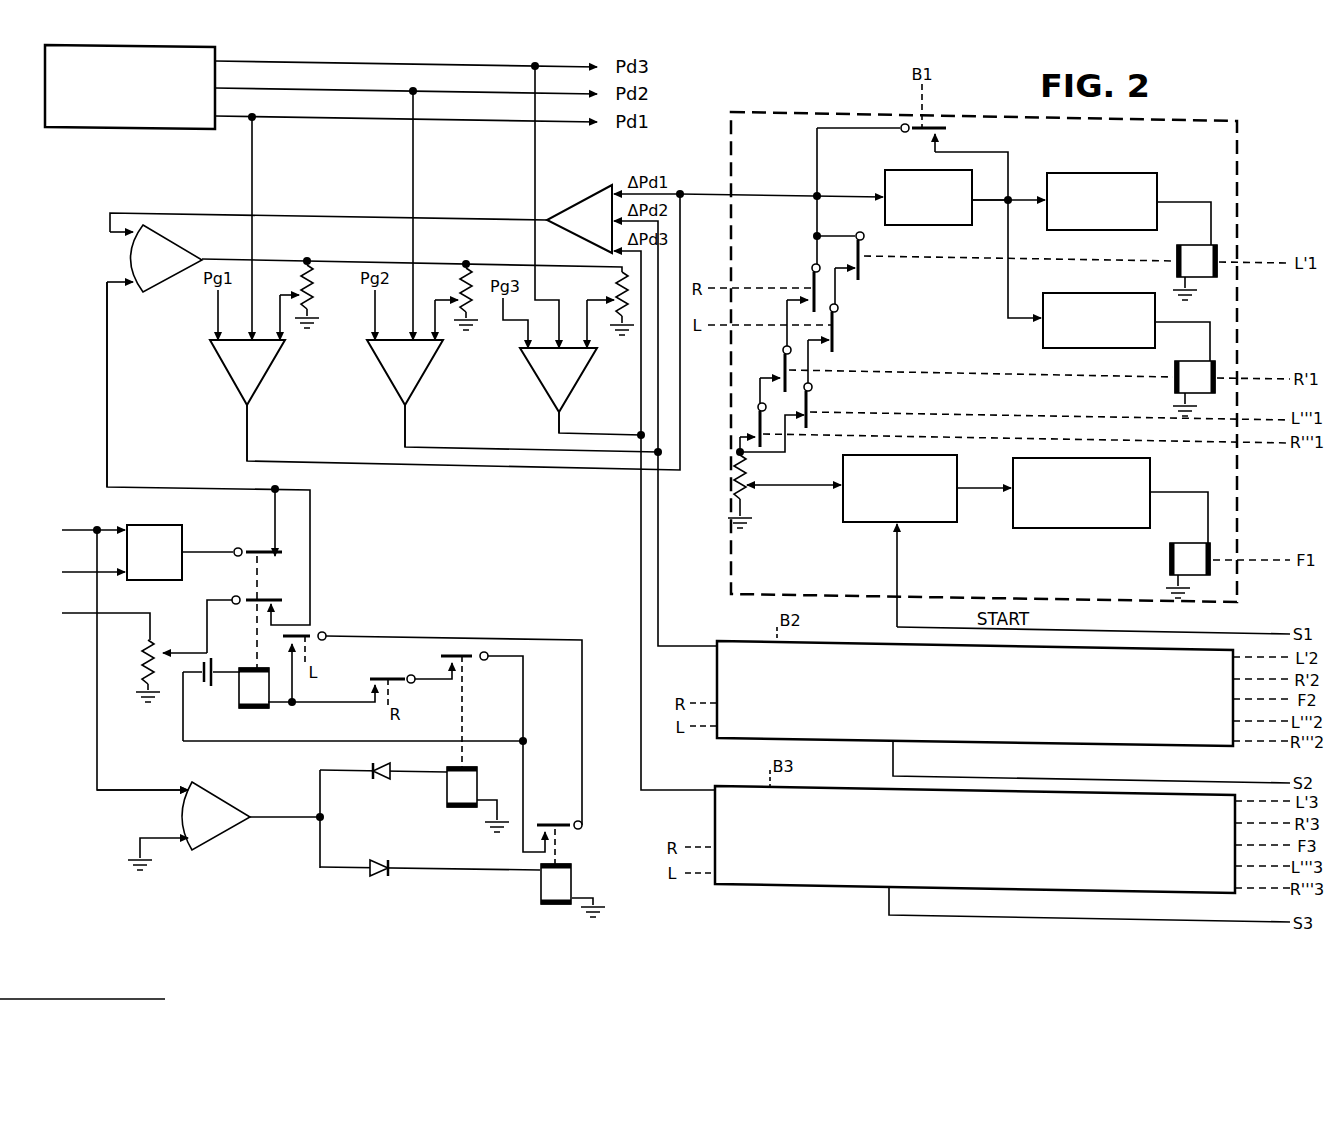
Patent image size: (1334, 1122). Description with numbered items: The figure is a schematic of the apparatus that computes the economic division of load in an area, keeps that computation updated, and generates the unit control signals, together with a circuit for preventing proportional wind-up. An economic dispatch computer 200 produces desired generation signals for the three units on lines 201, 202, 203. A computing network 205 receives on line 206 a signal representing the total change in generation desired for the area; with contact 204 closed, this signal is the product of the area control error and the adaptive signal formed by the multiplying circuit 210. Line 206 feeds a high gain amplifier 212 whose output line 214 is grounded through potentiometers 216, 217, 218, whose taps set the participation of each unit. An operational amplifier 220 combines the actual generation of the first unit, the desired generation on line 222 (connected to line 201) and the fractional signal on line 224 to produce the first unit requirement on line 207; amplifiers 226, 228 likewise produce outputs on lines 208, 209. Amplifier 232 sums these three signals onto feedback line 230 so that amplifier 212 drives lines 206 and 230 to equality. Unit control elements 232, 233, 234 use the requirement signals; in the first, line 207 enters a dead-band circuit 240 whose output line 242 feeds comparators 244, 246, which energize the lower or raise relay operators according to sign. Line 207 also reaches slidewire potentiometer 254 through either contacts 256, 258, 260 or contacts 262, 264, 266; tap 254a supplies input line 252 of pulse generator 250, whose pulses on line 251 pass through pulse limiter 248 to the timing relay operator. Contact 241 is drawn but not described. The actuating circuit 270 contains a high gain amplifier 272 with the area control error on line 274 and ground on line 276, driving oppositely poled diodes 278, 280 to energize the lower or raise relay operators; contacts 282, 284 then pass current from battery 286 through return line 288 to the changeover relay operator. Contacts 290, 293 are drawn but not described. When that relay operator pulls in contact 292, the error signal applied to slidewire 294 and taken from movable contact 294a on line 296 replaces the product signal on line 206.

The economic dispatch computer 200 is at (165, 128).
The line 201 is at (510, 121).
The line 202 is at (515, 93).
The line 203 is at (520, 66).
The contact 204 is at (258, 548).
The computing network 205 is at (284, 424).
The line 206 is at (107, 380).
The line 207 is at (245, 434).
The line 208 is at (403, 416).
The line 209 is at (602, 432).
The multiplying circuit 210 is at (152, 525).
The high gain amplifier 212 is at (165, 246).
The output line 214 is at (330, 265).
The potentiometer 216 is at (300, 272).
The potentiometer 217 is at (462, 272).
The potentiometer 218 is at (612, 272).
The operational amplifier 220 is at (226, 376).
The line 222 is at (252, 248).
The line 224 is at (282, 312).
The amplifier 226 is at (386, 378).
The amplifier 228 is at (538, 384).
The line 230 is at (322, 214).
The unit control element 232 is at (582, 192).
The unit control element 233 is at (740, 640).
The unit control element 234 is at (732, 787).
The dead-band circuit 240 is at (936, 226).
The switch 241 is at (926, 134).
The output line 242 is at (998, 212).
The comparator 244 is at (1094, 172).
The comparator 246 is at (1112, 291).
The pulse limiter 248 is at (1106, 530).
The pulse generator 250 is at (922, 524).
The line 251 is at (984, 490).
The input line 252 is at (828, 488).
The slidewire potentiometer 254 is at (732, 500).
The tap 254a is at (762, 488).
The relay contact 256 is at (811, 276).
The relay contact 258 is at (782, 362).
The relay contact 260 is at (758, 418).
The relay contact 262 is at (862, 270).
The relay contact 264 is at (838, 338).
The relay contact 266 is at (812, 398).
The actuating circuit 270 is at (246, 778).
The high gain amplifier 272 is at (216, 840).
The line 274 is at (152, 788).
The line 276 is at (150, 836).
The diode 278 is at (378, 780).
The diode 280 is at (380, 876).
The relay contact 282 is at (551, 823).
The relay contact 284 is at (325, 632).
The battery 286 is at (208, 690).
The return line 288 is at (306, 742).
The switch contact 290 is at (476, 660).
The relay contact 292 is at (270, 598).
The switch contact 293 is at (388, 676).
The slidewire 294 is at (143, 658).
The movable contact 294a is at (160, 651).
The line 296 is at (207, 650).